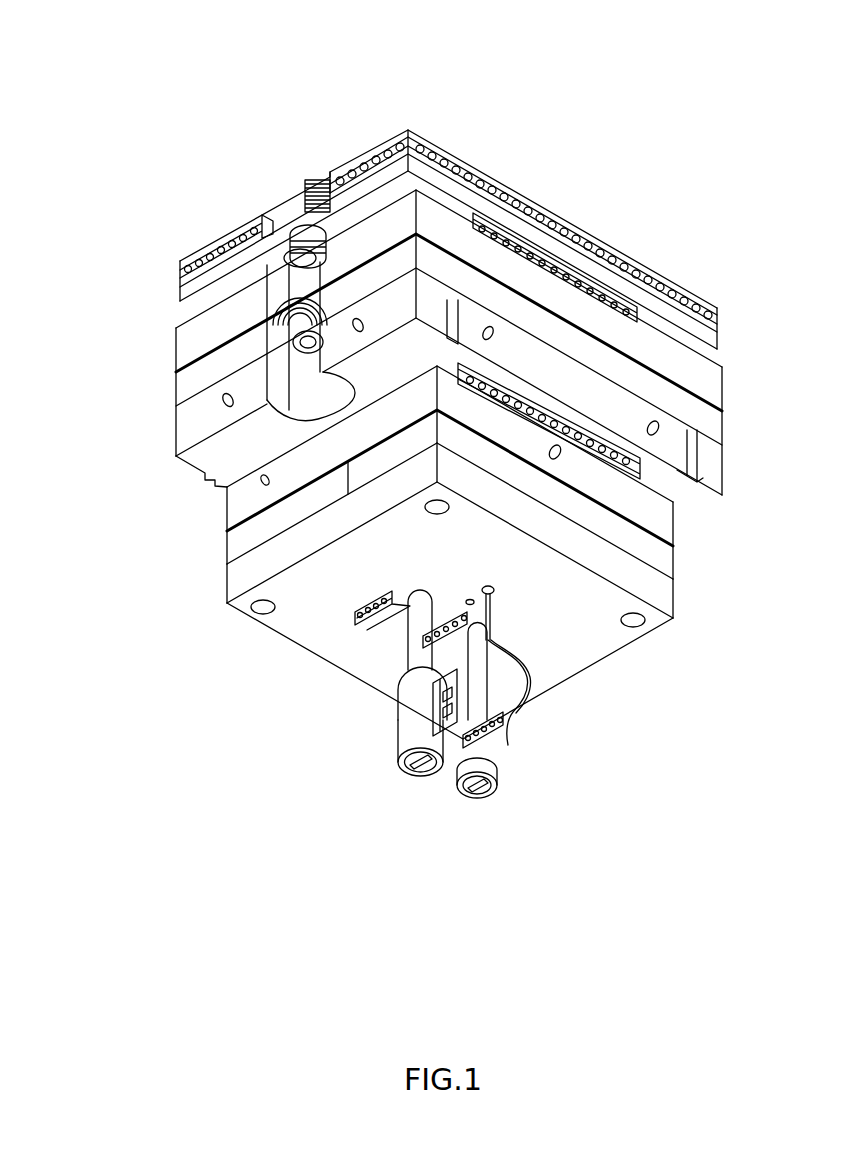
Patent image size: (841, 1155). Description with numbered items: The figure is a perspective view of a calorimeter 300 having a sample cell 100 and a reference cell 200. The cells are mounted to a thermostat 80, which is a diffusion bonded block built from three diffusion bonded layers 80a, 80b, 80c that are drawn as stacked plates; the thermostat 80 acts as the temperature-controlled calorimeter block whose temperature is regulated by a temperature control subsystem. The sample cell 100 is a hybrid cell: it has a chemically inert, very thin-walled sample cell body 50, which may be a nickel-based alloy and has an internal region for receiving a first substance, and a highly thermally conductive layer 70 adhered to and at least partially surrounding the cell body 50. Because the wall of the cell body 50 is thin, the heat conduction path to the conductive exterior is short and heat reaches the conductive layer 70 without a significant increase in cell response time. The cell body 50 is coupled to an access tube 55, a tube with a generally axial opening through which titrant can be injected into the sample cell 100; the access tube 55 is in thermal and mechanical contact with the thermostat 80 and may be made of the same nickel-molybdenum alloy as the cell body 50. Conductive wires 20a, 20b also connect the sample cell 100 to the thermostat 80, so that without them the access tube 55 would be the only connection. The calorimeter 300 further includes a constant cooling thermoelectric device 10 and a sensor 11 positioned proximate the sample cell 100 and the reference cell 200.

The calorimeter 300 is at (170, 82).
The thermostat 80 is at (178, 493).
The diffusion bonded layer 80a is at (231, 509).
The diffusion bonded layer 80b is at (231, 543).
The diffusion bonded layer 80c is at (231, 576).
The constant cooling thermoelectric device 10 is at (393, 634).
The conductive wire 20a is at (420, 633).
The conductive wire 20b is at (530, 673).
The access tube 55 is at (430, 651).
The sample cell 100 is at (388, 690).
The sensor 11 is at (493, 707).
The highly thermally conductive layer 70 is at (430, 716).
The sample cell body 50 is at (408, 765).
The reference cell 200 is at (512, 776).